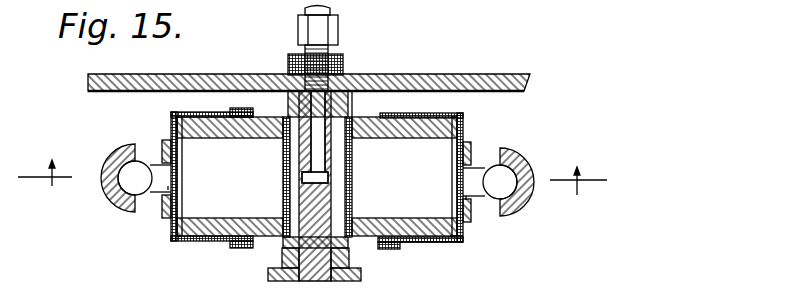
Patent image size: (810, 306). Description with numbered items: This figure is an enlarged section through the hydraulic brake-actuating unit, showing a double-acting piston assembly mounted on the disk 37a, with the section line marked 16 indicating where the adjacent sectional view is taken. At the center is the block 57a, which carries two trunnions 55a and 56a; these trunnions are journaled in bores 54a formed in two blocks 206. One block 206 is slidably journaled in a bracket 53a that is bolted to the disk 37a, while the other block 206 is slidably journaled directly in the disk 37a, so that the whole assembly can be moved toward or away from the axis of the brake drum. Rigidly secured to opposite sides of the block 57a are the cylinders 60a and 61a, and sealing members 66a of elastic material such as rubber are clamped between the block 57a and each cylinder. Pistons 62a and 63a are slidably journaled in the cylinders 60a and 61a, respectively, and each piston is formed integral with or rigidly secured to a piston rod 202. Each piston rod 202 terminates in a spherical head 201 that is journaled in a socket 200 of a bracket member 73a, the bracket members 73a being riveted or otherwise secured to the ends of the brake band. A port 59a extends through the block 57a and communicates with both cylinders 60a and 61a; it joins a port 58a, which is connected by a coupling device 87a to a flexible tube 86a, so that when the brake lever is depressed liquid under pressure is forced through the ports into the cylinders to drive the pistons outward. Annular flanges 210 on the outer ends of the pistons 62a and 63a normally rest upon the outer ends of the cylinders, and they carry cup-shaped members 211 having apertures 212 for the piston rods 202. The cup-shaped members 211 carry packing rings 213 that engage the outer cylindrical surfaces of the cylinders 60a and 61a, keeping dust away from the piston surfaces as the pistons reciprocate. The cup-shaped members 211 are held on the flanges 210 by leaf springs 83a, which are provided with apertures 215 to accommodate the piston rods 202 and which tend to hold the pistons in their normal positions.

The disk 37a is at (486, 86).
The flexible tube 86a is at (331, 10).
The coupling device 87a is at (339, 37).
The trunnion 56a is at (344, 64).
The bore 54a is at (288, 68).
The port 58a is at (320, 157).
The port 59a is at (303, 178).
The block 57a is at (318, 200).
The sealing member 66a is at (283, 169).
The trunnion 55a is at (320, 282).
The bracket 53a is at (271, 282).
The block 206 is at (280, 265).
The piston 62a is at (194, 150).
The cylinder 60a is at (213, 228).
The annular flange 210 is at (179, 204).
The cup-shaped member 211 is at (430, 114).
The packing ring 213 is at (238, 110).
The aperture 212 is at (460, 166).
The aperture 215 is at (168, 188).
The cylinder 61a is at (435, 249).
The piston 63a is at (452, 242).
The socket 200 is at (352, 100).
The piston rod 202 is at (151, 164).
The spherical head 201 is at (127, 181).
The bracket member 73a is at (112, 150).
The leaf spring 83a is at (164, 208).
The section line 16 is at (311, 177).